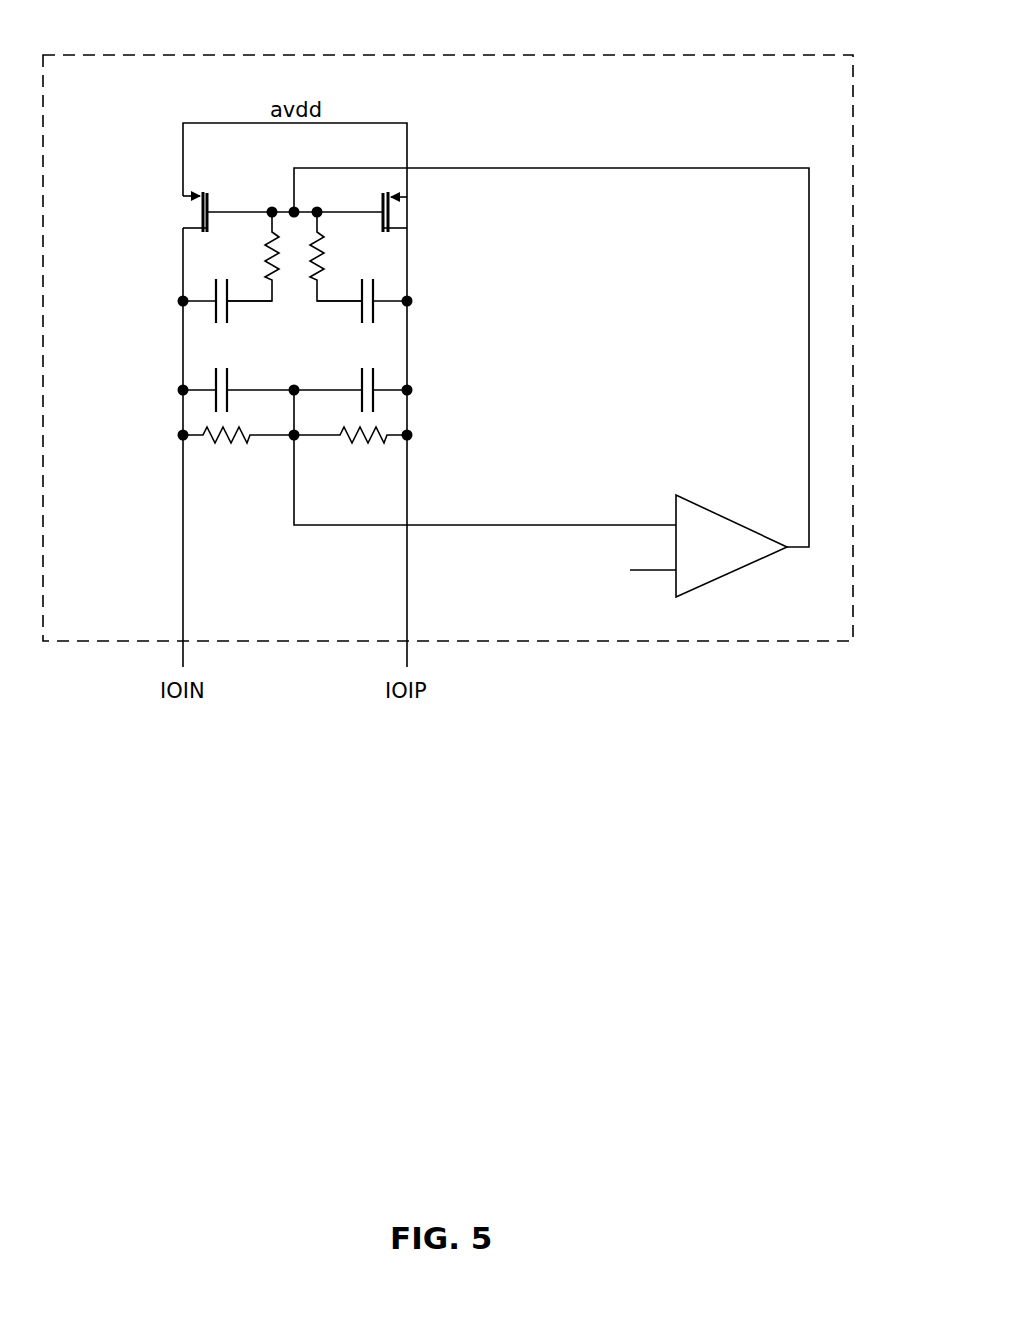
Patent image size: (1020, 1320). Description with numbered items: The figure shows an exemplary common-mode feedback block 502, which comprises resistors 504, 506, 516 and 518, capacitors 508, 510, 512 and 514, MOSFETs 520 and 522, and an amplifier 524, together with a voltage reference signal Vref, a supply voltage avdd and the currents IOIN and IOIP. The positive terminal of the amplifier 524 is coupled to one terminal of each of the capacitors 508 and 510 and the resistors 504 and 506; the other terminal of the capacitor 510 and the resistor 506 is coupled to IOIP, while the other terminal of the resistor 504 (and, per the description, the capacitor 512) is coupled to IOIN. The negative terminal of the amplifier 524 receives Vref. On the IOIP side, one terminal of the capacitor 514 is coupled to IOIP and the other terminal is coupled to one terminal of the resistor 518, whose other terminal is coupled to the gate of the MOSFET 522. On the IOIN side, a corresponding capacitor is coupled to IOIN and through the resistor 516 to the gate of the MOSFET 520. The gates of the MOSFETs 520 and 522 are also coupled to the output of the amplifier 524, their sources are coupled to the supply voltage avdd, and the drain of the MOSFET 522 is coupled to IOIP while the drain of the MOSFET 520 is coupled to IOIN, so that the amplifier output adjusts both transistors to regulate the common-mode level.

The common-mode feedback block 502 is at (538, 55).
The resistor 504 is at (232, 442).
The resistor 506 is at (360, 442).
The capacitor 508 is at (230, 388).
The capacitor 510 is at (362, 388).
The capacitor 512 is at (228, 303).
The capacitor 514 is at (362, 306).
The resistor 516 is at (268, 254).
The resistor 518 is at (322, 251).
The MOSFET 520 is at (208, 200).
The MOSFET 522 is at (397, 226).
The amplifier 524 is at (718, 512).